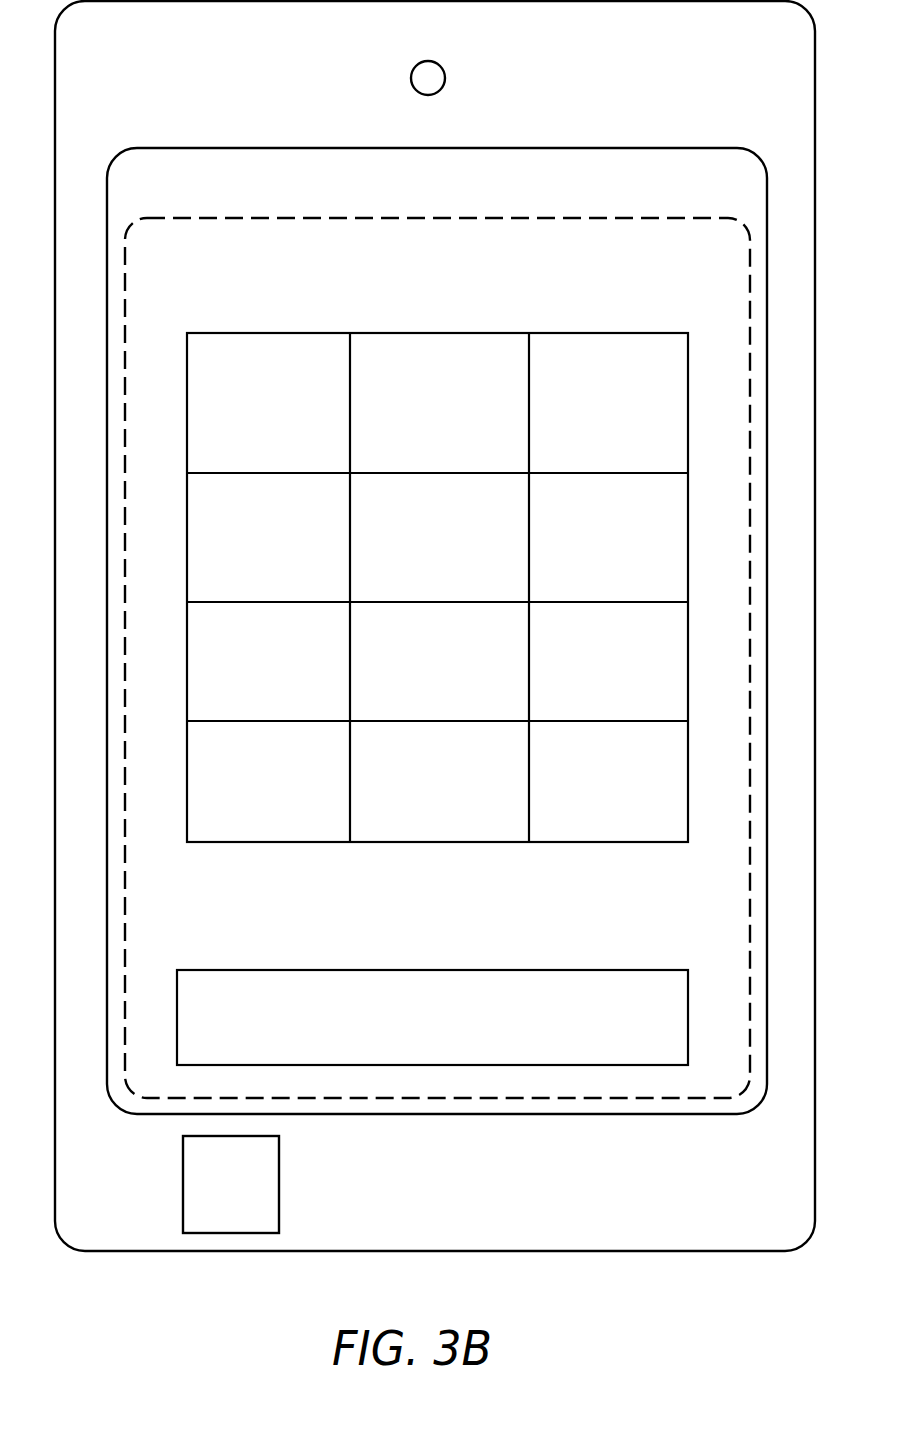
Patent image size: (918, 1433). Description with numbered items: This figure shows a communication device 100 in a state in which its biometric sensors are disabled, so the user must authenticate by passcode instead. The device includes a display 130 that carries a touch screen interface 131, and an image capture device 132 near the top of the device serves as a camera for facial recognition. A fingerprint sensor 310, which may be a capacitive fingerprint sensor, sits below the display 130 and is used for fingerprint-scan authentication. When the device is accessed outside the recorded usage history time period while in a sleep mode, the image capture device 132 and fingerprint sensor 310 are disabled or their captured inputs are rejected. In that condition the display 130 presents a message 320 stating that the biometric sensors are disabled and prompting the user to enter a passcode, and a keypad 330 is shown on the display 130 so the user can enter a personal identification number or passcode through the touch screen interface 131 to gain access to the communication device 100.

The communication device 100 is at (580, 32).
The display 130 is at (498, 182).
The touch screen interface 131 is at (455, 279).
The image capture device 132 is at (411, 78).
The fingerprint sensor 310 is at (279, 1177).
The message 320 is at (475, 970).
The keypad 330 is at (322, 843).